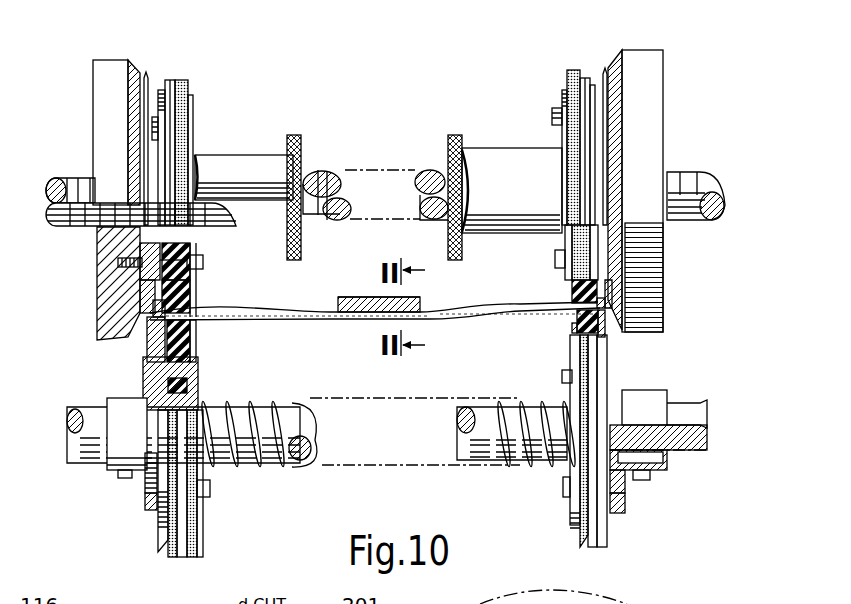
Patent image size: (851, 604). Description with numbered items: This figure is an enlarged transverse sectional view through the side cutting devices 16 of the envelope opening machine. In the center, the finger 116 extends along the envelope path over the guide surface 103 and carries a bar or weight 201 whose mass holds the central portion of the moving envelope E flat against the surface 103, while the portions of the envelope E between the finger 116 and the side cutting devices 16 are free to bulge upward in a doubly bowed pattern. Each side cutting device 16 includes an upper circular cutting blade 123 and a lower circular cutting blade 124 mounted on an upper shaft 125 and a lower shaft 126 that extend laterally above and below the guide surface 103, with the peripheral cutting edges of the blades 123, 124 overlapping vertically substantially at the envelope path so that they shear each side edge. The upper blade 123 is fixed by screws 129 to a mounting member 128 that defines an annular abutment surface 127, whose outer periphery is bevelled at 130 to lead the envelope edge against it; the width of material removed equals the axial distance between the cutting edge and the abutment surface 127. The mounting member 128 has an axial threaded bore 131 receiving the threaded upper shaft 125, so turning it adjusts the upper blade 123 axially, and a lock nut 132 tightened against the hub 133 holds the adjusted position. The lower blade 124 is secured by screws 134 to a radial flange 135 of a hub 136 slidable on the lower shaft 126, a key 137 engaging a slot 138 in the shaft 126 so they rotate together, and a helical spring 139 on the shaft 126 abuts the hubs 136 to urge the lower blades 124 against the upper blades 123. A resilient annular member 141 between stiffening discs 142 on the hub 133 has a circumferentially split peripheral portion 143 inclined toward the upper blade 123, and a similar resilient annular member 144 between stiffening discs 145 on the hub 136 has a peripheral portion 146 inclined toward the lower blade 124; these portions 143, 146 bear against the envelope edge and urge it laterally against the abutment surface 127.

The side cutting device 16 is at (193, 50).
The guide surface 103 is at (437, 323).
The finger 116 is at (350, 298).
The upper circular cutting blade 123 is at (152, 78).
The lower circular cutting blade 124 is at (163, 532).
The upper shaft 125 is at (323, 173).
The lower shaft 126 is at (298, 425).
The abutment surface 127 is at (147, 62).
The mounting member 128 is at (110, 290).
The screws 129 is at (203, 262).
The bevel 130 is at (147, 333).
The axial threaded bore 131 is at (97, 245).
The lock nut 132 is at (303, 247).
The hub 133 is at (222, 160).
The screws 134 is at (200, 367).
The radial flange 135 is at (148, 498).
The hub 136 is at (117, 470).
The key 137 is at (660, 455).
The slot 138 is at (693, 453).
The helical spring 139 is at (253, 407).
The resilient annular member 141 is at (225, 303).
The stiffening discs 142 is at (167, 82).
The circumferentially split peripheral portion 143 is at (187, 83).
The resilient annular member 144 is at (200, 350).
The stiffening discs 145 is at (197, 338).
The peripheral portion 146 is at (190, 543).
The bar or weight 201 is at (367, 297).
The envelope E is at (470, 305).